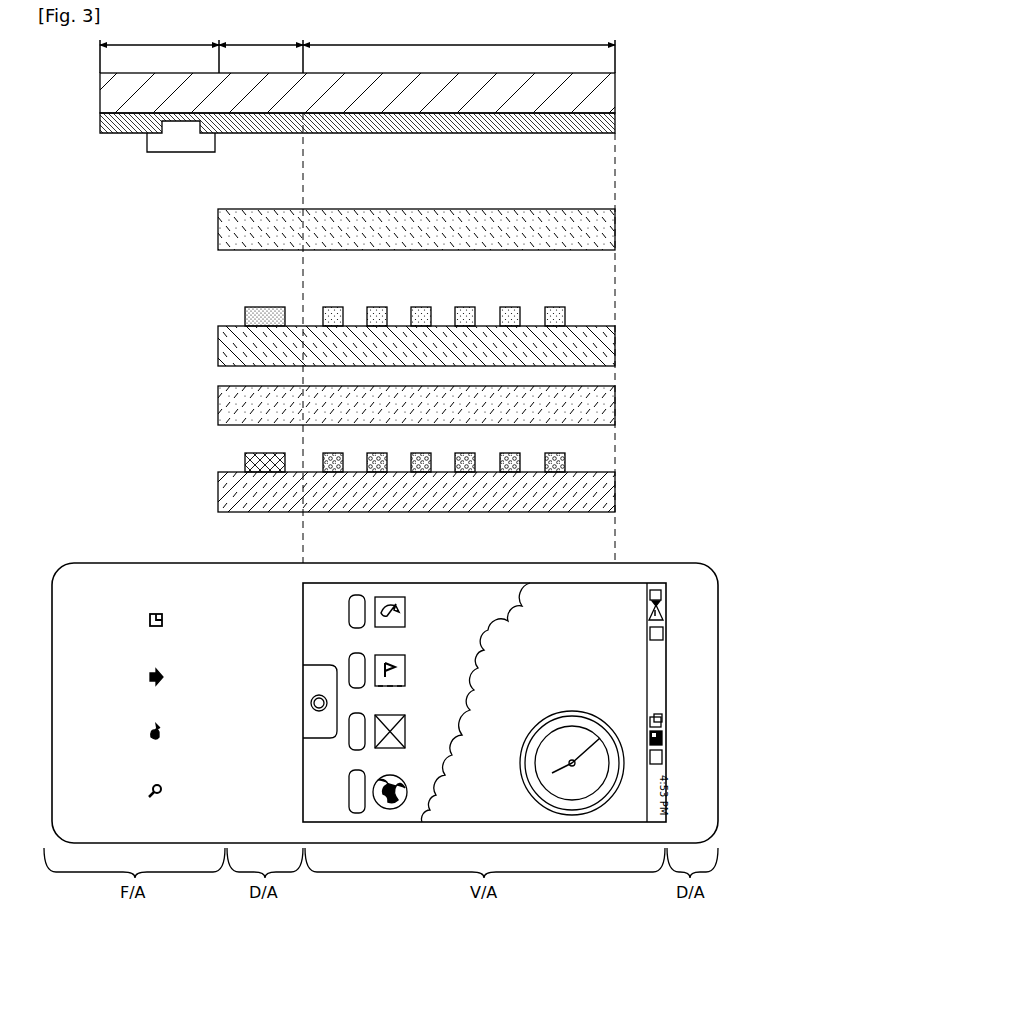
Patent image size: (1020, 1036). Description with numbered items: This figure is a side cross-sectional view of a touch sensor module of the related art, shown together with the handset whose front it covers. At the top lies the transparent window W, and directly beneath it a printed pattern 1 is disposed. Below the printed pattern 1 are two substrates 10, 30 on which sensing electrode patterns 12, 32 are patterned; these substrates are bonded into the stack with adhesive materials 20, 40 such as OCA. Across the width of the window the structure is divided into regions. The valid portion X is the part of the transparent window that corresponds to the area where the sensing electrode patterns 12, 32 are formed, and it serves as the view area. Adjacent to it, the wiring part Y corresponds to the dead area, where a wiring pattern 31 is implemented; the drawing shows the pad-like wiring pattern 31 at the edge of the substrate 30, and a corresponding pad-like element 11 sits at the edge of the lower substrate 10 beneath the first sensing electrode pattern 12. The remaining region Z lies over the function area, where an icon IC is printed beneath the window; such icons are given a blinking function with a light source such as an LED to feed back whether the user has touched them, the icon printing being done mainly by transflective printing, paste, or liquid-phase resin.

The transparent window W is at (600, 93).
The printed pattern 1 is at (616, 125).
The icon IC is at (184, 160).
The adhesive material 40 is at (616, 229).
The wiring pattern 31 is at (266, 306).
The sensing electrode pattern 32 is at (566, 308).
The substrate 30 is at (616, 346).
The adhesive material 20 is at (604, 404).
The first electrode pad 11 is at (259, 452).
The sensing electrode pattern 12 is at (566, 454).
The substrate 10 is at (616, 490).
The region Z width Z is at (158, 35).
The wiring part Y is at (259, 35).
The valid portion X is at (457, 35).